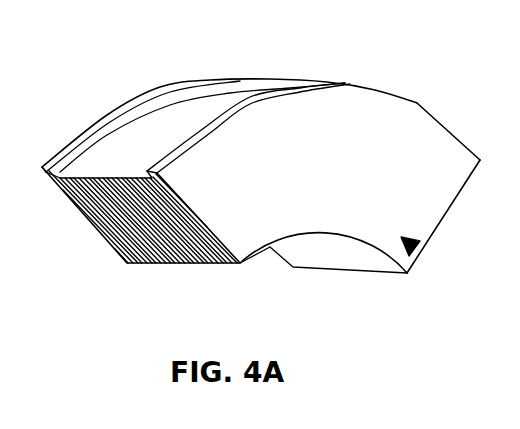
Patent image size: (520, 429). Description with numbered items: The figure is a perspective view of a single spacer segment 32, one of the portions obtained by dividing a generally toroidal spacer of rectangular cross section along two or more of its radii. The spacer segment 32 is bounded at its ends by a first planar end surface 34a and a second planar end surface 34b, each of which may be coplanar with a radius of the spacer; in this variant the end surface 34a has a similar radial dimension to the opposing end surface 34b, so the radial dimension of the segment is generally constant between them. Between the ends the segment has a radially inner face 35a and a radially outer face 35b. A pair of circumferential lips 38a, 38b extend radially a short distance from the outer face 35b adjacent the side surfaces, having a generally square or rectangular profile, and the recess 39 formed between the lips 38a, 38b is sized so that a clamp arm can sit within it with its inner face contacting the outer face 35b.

The spacer segment 32 is at (411, 250).
The first planar end surface 34a is at (140, 227).
The second planar end surface 34b is at (450, 213).
The radially inner face 35a is at (353, 248).
The radially outer face 35b is at (183, 140).
The circumferential lip 38a is at (78, 150).
The circumferential lip 38b is at (417, 102).
The recess 39 is at (127, 147).